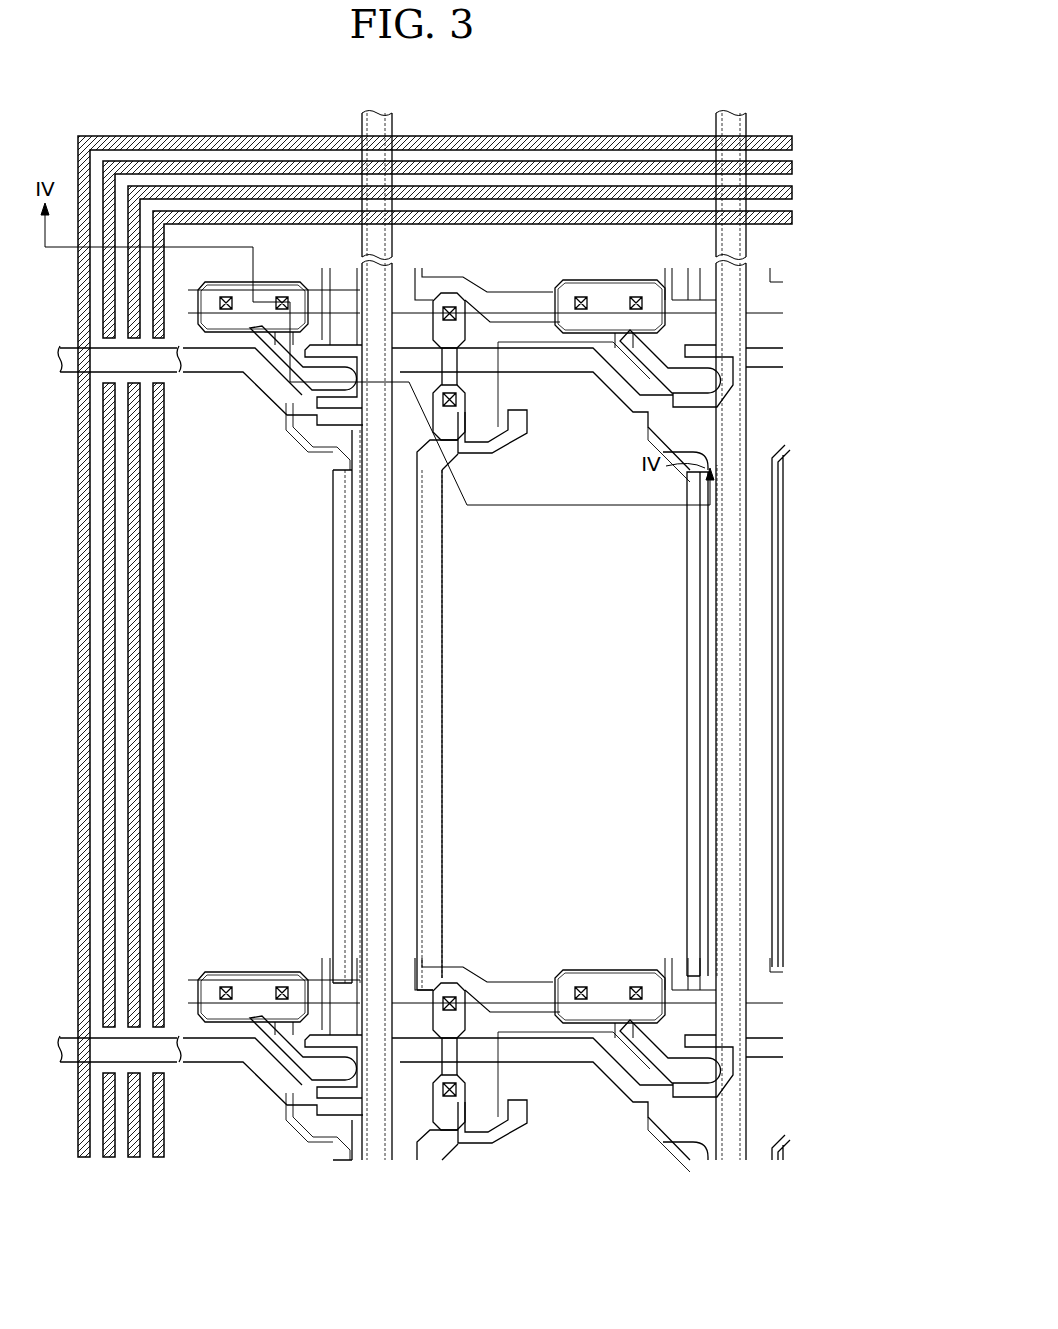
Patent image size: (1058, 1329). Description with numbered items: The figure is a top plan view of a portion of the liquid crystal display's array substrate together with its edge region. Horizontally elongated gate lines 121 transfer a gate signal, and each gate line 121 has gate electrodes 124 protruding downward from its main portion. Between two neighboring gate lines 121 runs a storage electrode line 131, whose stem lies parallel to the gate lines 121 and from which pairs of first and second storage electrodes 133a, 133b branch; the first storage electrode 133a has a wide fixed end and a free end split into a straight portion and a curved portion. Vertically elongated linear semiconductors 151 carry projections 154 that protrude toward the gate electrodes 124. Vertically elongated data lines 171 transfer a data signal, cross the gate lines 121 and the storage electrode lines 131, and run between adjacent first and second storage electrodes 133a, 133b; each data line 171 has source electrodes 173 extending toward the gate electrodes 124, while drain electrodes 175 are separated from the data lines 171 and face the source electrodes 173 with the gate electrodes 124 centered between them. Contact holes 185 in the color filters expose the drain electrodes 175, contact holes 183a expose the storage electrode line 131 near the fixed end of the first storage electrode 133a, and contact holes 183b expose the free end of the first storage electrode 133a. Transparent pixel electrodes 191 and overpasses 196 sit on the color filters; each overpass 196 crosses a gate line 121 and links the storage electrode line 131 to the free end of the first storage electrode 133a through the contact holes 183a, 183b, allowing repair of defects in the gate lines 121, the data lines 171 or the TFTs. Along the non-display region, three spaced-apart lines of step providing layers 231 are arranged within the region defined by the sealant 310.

The sealant 310 is at (512, 136).
The step providing layer 231 is at (101, 601).
The gate line 121 is at (205, 374).
The gate electrode 124 is at (321, 330).
The storage electrode line 131 is at (439, 298).
The linear semiconductor 151 is at (365, 638).
The projection 154 is at (336, 426).
The data line 171 is at (361, 602).
The source electrode 173 is at (340, 424).
The drain electrode 175 is at (306, 378).
The contact hole 185 is at (221, 296).
The contact hole 183a is at (450, 306).
The contact hole 183b is at (458, 401).
The pixel electrode 191 is at (345, 557).
The first storage electrode 133a is at (444, 696).
The second storage electrode 133b is at (699, 698).
The overpass 196 is at (470, 414).